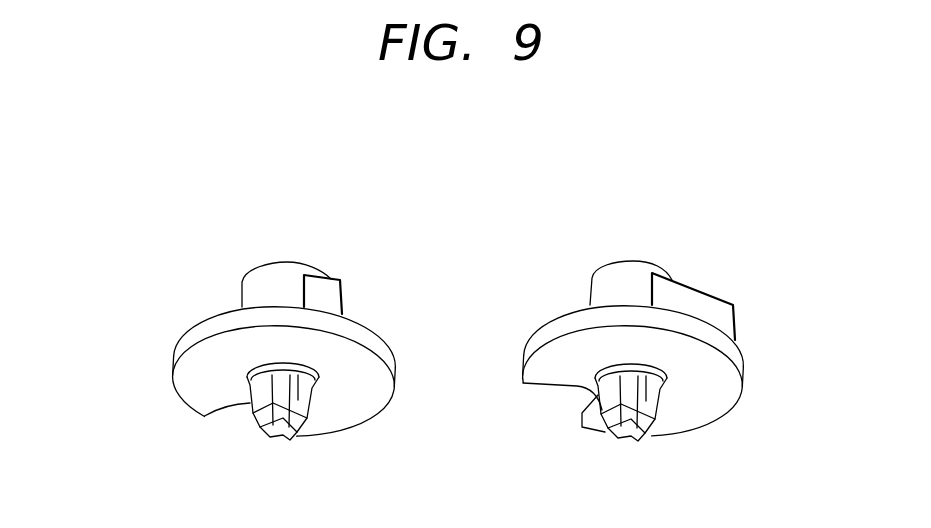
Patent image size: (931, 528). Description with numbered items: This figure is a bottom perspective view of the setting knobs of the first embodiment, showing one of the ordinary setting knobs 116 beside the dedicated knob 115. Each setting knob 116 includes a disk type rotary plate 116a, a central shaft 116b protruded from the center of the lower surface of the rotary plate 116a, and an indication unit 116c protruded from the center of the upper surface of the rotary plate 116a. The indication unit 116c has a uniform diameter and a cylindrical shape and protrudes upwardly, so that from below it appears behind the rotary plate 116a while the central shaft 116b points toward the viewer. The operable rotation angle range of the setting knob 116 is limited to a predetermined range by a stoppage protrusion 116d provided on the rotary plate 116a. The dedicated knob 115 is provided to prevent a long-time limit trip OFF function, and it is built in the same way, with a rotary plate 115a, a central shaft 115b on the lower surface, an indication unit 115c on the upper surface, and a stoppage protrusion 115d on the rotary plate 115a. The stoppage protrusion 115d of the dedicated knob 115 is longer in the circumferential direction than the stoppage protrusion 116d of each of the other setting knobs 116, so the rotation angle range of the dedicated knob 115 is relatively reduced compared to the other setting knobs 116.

The dedicated knob 115 is at (525, 316).
The rotary plate 115a is at (707, 430).
The central shaft 115b is at (610, 410).
The indication unit 115c is at (625, 270).
The stoppage protrusion 115d is at (682, 288).
The setting knob 116 is at (167, 325).
The rotary plate 116a is at (177, 393).
The central shaft 116b is at (263, 397).
The indication unit 116c is at (275, 270).
The stoppage protrusion 116d is at (325, 287).